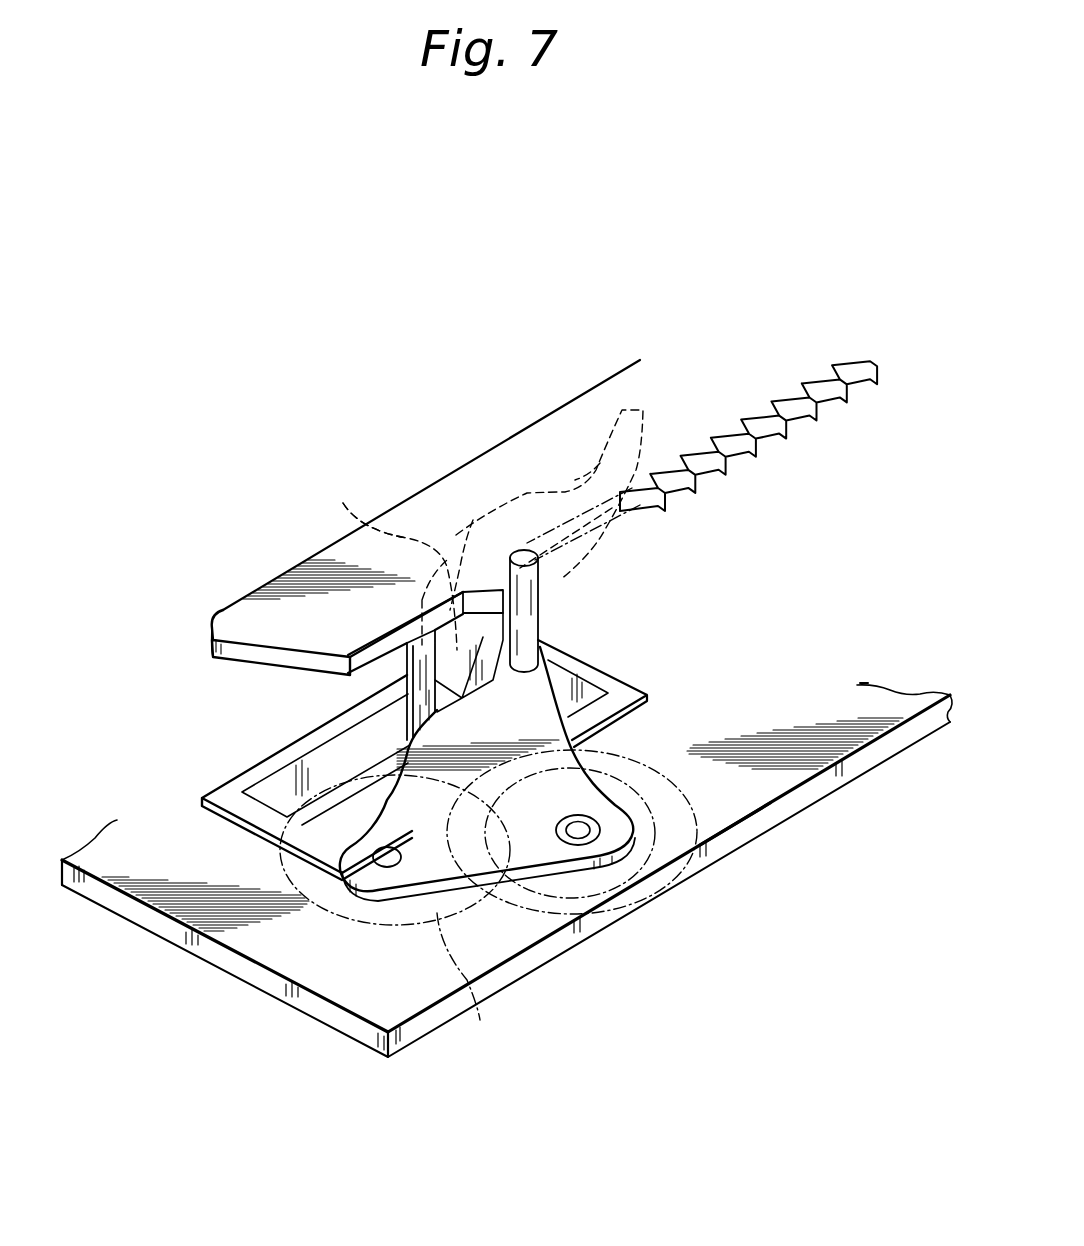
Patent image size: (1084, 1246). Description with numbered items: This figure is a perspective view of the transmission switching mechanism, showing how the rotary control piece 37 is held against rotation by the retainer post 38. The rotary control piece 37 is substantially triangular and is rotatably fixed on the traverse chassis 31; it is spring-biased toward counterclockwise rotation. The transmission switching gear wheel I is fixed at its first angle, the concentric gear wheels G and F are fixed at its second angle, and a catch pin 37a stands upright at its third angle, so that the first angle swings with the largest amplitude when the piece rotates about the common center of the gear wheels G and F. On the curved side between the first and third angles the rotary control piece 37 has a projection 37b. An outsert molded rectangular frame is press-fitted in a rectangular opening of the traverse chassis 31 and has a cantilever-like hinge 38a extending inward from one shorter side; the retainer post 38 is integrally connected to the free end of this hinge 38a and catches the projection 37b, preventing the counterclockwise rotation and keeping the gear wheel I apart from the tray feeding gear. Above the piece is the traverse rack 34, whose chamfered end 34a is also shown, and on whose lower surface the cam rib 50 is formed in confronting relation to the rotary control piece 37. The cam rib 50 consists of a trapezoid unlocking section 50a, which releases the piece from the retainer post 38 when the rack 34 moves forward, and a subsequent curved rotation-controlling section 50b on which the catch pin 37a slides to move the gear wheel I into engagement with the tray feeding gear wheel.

The traverse chassis 31 is at (337, 981).
The traverse rack 34 is at (608, 386).
The chamfered end 34a is at (262, 656).
The rotary control piece 37 is at (544, 857).
The catch pin 37a is at (540, 617).
The projection 37b is at (438, 697).
The retainer post 38 is at (402, 666).
The cantilever-like hinge 38a is at (298, 820).
The cam rib 50 is at (540, 482).
The trapezoid unlocking section 50a is at (375, 530).
The curved rotation-controlling section 50b is at (625, 525).
The gear wheel F is at (740, 823).
The gear wheel G is at (700, 857).
The transmission switching gear wheel I is at (458, 980).